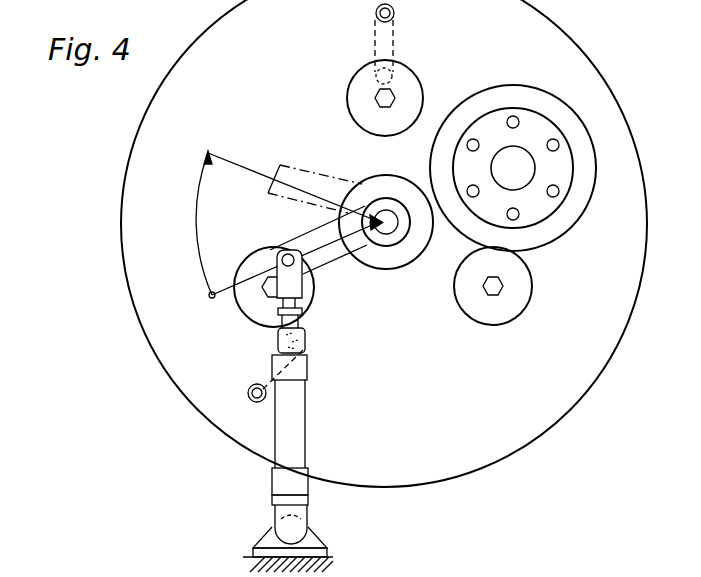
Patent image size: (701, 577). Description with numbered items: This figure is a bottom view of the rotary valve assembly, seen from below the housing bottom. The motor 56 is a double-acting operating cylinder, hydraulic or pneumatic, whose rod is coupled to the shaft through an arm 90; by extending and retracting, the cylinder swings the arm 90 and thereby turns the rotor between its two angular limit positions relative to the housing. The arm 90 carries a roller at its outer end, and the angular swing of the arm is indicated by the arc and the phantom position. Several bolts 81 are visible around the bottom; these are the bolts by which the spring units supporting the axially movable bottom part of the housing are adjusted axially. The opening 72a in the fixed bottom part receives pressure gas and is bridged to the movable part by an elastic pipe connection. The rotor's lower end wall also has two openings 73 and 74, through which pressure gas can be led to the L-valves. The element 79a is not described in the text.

The motor 56 is at (283, 447).
The opening 72a is at (248, 390).
The opening 73 is at (287, 342).
The opening 74 is at (392, 72).
The stop pin 79a is at (405, 14).
The bolts 81 is at (378, 95).
The arm 90 is at (330, 257).